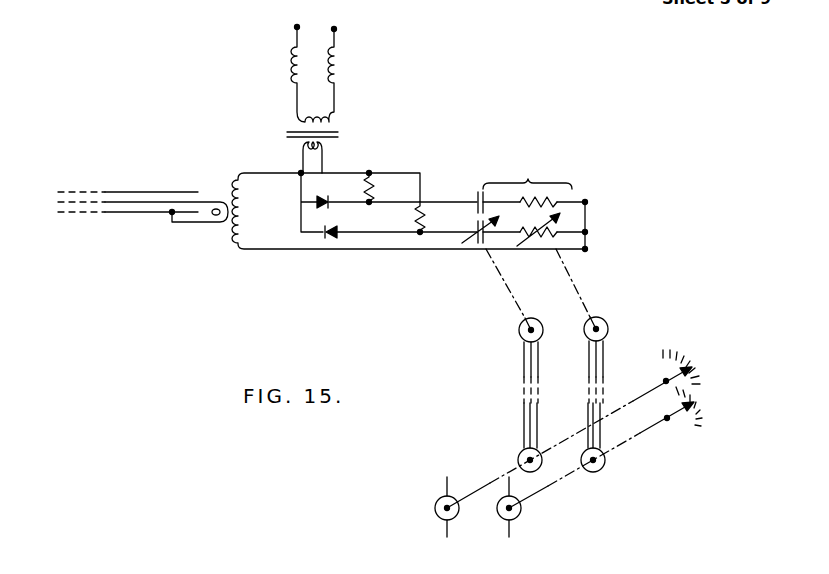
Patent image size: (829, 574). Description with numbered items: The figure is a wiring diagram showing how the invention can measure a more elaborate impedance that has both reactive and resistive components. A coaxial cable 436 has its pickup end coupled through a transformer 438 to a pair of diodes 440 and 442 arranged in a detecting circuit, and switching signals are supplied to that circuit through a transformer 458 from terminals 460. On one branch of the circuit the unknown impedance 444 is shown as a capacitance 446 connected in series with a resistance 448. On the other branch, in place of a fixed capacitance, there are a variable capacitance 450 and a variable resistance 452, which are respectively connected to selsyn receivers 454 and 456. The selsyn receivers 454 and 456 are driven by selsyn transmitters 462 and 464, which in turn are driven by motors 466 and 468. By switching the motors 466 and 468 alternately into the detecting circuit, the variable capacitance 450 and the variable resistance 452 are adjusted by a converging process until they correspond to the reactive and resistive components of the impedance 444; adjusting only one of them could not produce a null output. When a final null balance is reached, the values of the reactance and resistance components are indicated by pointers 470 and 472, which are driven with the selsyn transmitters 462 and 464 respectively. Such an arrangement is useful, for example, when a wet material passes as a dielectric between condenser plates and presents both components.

The coaxial cable 436 is at (133, 192).
The transformer 438 is at (232, 220).
The diode 440 is at (321, 199).
The diode 442 is at (333, 231).
The impedance 444 is at (527, 173).
The capacitance 446 is at (476, 197).
The resistance 448 is at (556, 198).
The variable capacitance 450 is at (480, 245).
The variable resistance 452 is at (555, 242).
The selsyn receiver 454 is at (519, 333).
The selsyn receiver 456 is at (608, 331).
The transformer 458 is at (345, 133).
The terminals 460 is at (297, 27).
The selsyn transmitter 462 is at (519, 458).
The selsyn transmitter 464 is at (606, 468).
The motor 466 is at (438, 499).
The motor 468 is at (520, 514).
The pointer 470 is at (673, 373).
The pointer 472 is at (681, 418).